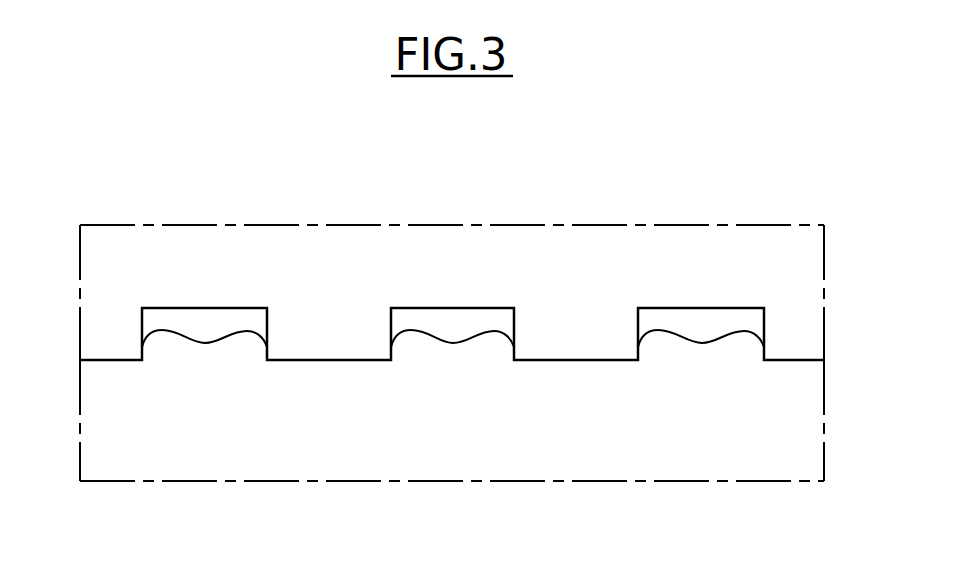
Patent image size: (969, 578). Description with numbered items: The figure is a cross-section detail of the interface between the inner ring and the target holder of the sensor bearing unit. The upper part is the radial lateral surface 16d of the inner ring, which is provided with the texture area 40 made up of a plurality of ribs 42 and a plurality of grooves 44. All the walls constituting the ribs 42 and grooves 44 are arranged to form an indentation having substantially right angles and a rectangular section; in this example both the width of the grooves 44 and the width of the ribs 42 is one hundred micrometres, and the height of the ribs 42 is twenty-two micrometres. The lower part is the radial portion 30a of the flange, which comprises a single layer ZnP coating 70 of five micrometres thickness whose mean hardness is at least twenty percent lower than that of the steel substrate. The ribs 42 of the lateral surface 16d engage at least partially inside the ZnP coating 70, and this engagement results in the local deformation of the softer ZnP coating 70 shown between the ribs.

The lateral surface 16d is at (818, 277).
The radial portion 30a is at (820, 431).
The texture area 40 is at (585, 298).
The ribs 42 is at (112, 353).
The grooves 44 is at (207, 308).
The ZnP coating 70 is at (806, 471).